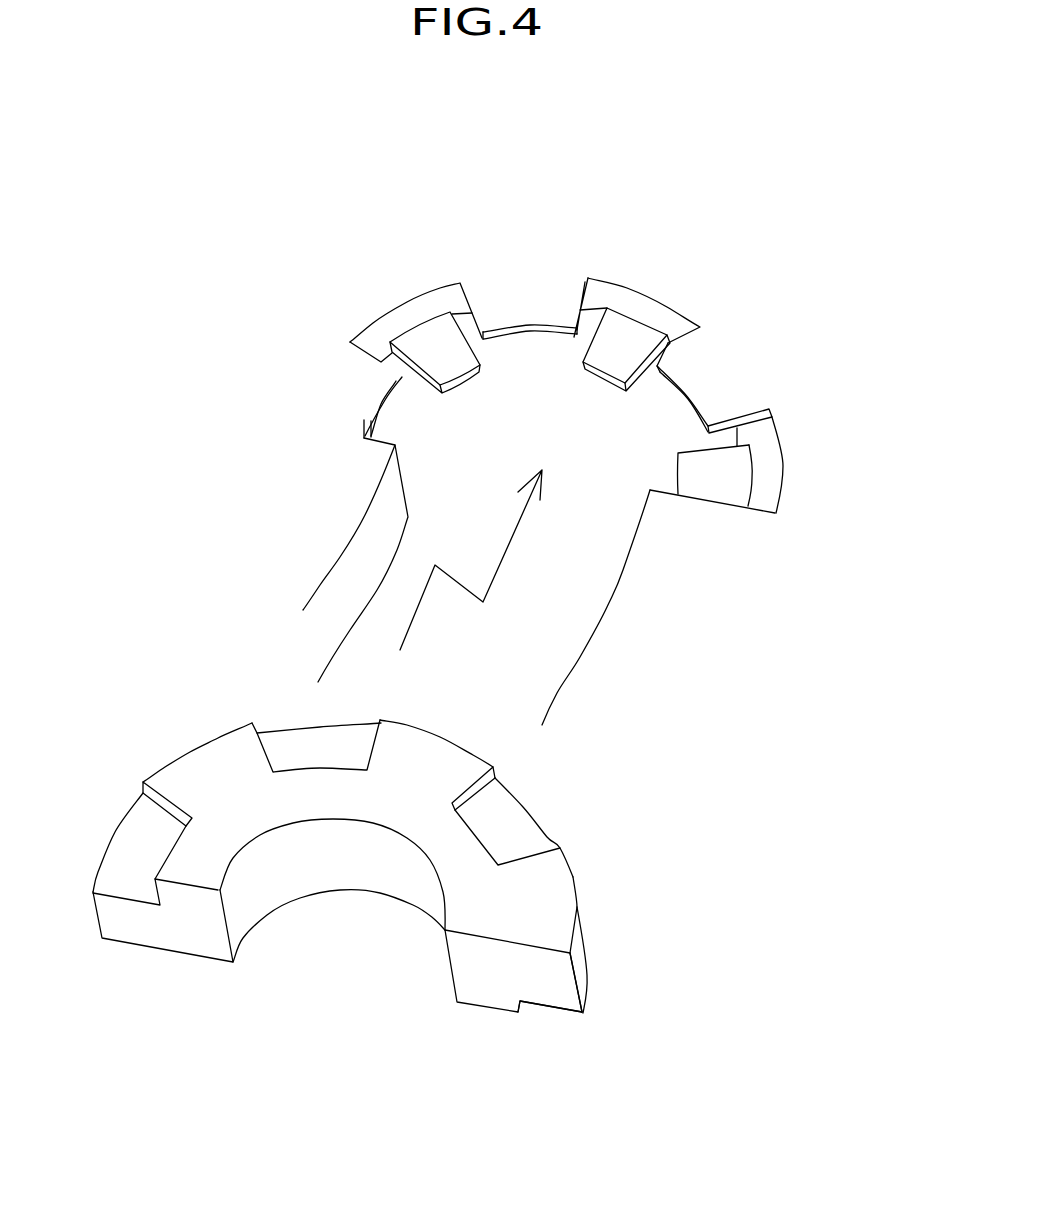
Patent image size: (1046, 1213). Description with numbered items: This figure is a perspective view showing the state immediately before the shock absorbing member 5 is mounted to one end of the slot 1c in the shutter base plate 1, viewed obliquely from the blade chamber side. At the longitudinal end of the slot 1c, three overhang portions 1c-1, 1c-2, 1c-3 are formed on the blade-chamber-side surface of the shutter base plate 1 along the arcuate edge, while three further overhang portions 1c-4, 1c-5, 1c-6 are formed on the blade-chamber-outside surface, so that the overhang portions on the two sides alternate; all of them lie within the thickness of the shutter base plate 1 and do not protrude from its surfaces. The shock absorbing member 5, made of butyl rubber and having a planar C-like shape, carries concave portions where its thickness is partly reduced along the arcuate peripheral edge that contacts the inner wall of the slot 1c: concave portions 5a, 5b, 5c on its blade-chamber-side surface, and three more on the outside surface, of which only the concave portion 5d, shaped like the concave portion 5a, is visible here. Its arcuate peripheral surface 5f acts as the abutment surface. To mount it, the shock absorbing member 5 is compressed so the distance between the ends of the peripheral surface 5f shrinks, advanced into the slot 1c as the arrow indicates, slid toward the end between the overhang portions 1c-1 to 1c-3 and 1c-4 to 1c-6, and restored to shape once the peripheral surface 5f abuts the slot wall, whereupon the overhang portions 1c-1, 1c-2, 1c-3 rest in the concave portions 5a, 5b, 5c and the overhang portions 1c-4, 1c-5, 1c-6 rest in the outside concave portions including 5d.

The shutter base plate 1 is at (290, 464).
The slot 1c is at (626, 598).
The overhang portion 1c-1 is at (368, 377).
The overhang portion 1c-2 is at (527, 298).
The overhang portion 1c-3 is at (717, 375).
The overhang portion 1c-4 is at (437, 340).
The overhang portion 1c-5 is at (625, 323).
The overhang portion 1c-6 is at (738, 478).
The shock absorbing member 5 is at (652, 885).
The concave portion 5a is at (140, 853).
The concave portion 5b is at (325, 748).
The concave portion 5c is at (503, 828).
The concave portion 5d is at (552, 1013).
The arcuate peripheral surface 5f is at (577, 947).